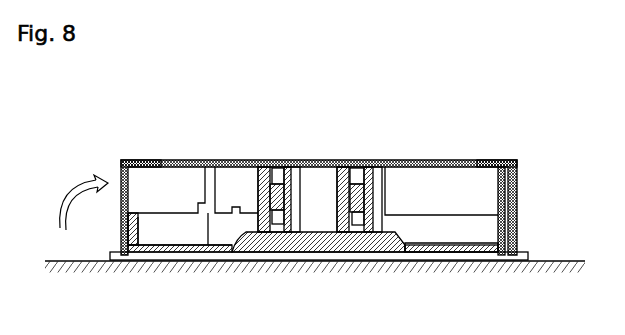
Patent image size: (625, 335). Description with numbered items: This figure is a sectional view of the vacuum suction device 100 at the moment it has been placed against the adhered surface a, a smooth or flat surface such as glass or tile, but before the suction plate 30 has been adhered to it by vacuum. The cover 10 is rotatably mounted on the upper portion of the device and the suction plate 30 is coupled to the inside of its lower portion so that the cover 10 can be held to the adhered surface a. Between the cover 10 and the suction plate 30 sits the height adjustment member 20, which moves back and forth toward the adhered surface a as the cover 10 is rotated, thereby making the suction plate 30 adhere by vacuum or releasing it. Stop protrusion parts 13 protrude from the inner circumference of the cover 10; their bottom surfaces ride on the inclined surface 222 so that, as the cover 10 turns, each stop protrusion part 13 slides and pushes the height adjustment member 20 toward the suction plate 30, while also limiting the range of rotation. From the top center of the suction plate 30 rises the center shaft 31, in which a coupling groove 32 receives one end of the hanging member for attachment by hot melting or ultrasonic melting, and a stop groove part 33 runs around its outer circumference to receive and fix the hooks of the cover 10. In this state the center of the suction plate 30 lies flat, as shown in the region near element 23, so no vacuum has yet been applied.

The vacuum suction device 100 is at (339, 166).
The cover 10 is at (339, 187).
The stop protrusion part 13 is at (212, 160).
The height adjustment member 20 is at (166, 199).
The guide block 23 is at (243, 206).
The center shaft 31 is at (346, 160).
The coupling groove 32 is at (318, 274).
The stop groove part 33 is at (283, 263).
The suction plate 30 is at (507, 265).
The inclined surface 222 is at (450, 211).
The adhered surface a is at (72, 251).